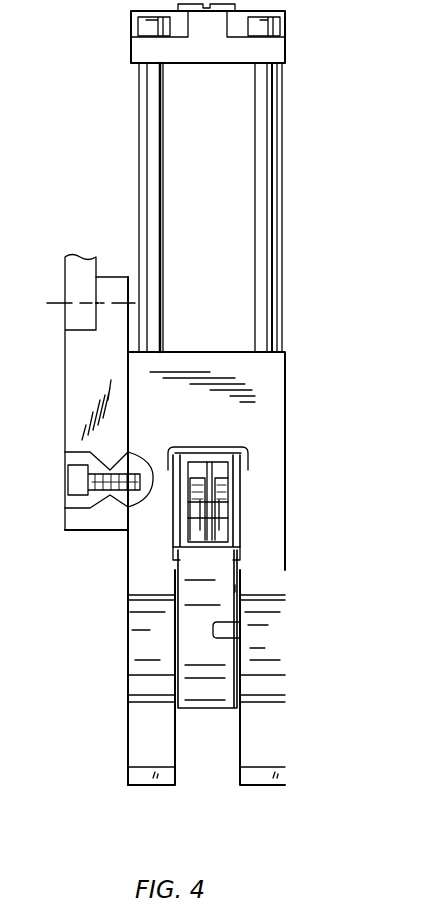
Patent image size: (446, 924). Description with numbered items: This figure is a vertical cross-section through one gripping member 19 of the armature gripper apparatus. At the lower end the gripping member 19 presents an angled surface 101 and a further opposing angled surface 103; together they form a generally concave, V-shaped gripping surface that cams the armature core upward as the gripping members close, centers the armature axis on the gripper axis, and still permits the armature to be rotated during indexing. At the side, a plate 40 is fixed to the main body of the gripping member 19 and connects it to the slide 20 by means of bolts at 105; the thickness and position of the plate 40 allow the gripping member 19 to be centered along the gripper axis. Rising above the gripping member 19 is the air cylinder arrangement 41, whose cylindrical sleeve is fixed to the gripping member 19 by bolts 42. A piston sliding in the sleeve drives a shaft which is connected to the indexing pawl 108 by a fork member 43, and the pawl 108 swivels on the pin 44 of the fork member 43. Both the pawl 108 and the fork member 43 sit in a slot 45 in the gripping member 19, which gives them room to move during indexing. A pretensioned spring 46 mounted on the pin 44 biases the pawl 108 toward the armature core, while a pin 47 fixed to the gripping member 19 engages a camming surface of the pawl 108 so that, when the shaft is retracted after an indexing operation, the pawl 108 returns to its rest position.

The gripping member 19 is at (322, 622).
The slide 20 is at (75, 272).
The plate 40 is at (78, 410).
The air cylinder arrangement 41 is at (320, 208).
The bolts 42 is at (152, 22).
The fork member 43 is at (237, 483).
The pin 44 is at (215, 516).
The slot 45 is at (240, 452).
The pretensioned spring 46 is at (195, 507).
The pin 47 is at (240, 630).
The angled surface 101 is at (138, 735).
The opposing angled surface 103 is at (140, 645).
The bolts 105 is at (65, 303).
The indexing pawl 108 is at (218, 712).